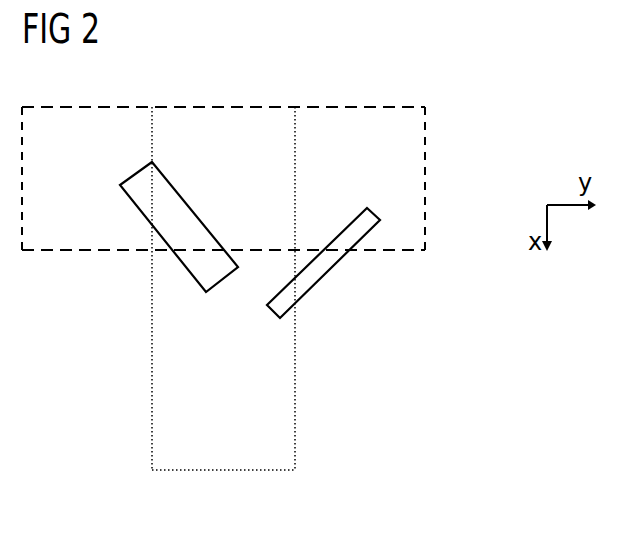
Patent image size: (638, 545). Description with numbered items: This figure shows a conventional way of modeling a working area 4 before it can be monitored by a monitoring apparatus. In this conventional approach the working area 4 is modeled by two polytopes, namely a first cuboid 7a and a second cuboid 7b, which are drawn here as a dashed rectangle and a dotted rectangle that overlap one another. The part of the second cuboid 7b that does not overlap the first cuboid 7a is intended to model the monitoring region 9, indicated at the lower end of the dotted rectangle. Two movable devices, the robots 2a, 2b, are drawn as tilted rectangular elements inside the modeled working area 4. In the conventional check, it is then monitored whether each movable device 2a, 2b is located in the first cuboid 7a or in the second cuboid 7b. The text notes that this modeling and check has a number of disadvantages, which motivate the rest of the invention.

The working area 4 is at (226, 87).
The first cuboid 7a is at (424, 183).
The second cuboid 7b is at (288, 410).
The movable device 2a is at (192, 217).
The movable device 2b is at (323, 267).
The monitoring region 9 is at (222, 463).